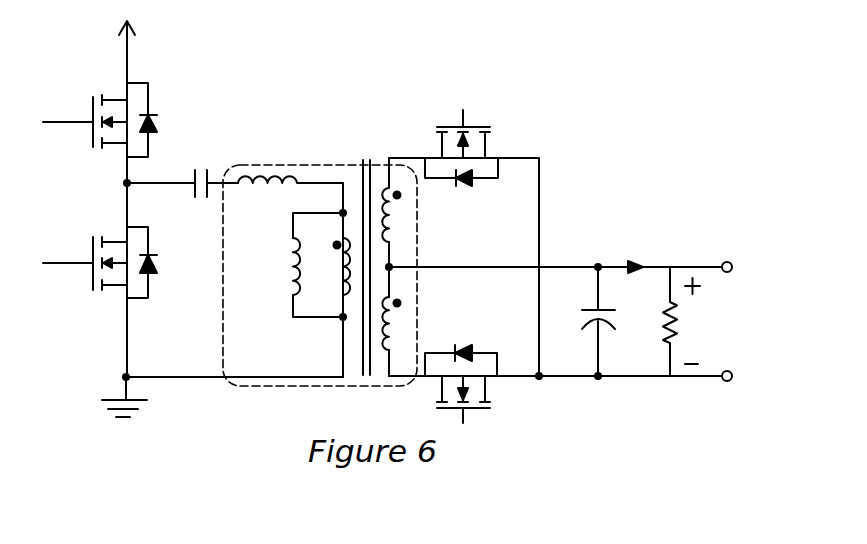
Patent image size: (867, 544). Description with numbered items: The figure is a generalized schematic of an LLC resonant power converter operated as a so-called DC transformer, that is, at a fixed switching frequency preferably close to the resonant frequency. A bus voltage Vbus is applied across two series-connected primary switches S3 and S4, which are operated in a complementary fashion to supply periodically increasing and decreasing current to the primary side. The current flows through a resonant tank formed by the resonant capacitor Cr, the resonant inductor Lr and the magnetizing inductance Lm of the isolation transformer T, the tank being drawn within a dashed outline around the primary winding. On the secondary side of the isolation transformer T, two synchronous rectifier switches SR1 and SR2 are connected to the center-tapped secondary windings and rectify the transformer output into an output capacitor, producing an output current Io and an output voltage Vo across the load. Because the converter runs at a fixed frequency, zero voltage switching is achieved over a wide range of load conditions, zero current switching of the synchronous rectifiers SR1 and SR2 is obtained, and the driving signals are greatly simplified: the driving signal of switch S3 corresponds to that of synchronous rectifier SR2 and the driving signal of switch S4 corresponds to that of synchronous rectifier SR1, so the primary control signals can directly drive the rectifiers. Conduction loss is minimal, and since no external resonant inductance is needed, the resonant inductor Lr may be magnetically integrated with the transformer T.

The bus voltage Vbus is at (98, 52).
The primary switch S3 is at (100, 133).
The primary switch S4 is at (100, 280).
The resonant capacitor Cr is at (216, 163).
The resonant inductor Lr is at (290, 253).
The magnetizing inductance Lm is at (300, 265).
The isolation transformer T is at (320, 255).
The synchronous rectifier switch SR1 is at (487, 148).
The synchronous rectifier switch SR2 is at (485, 384).
The output current Io is at (634, 249).
The output voltage Vo is at (697, 321).